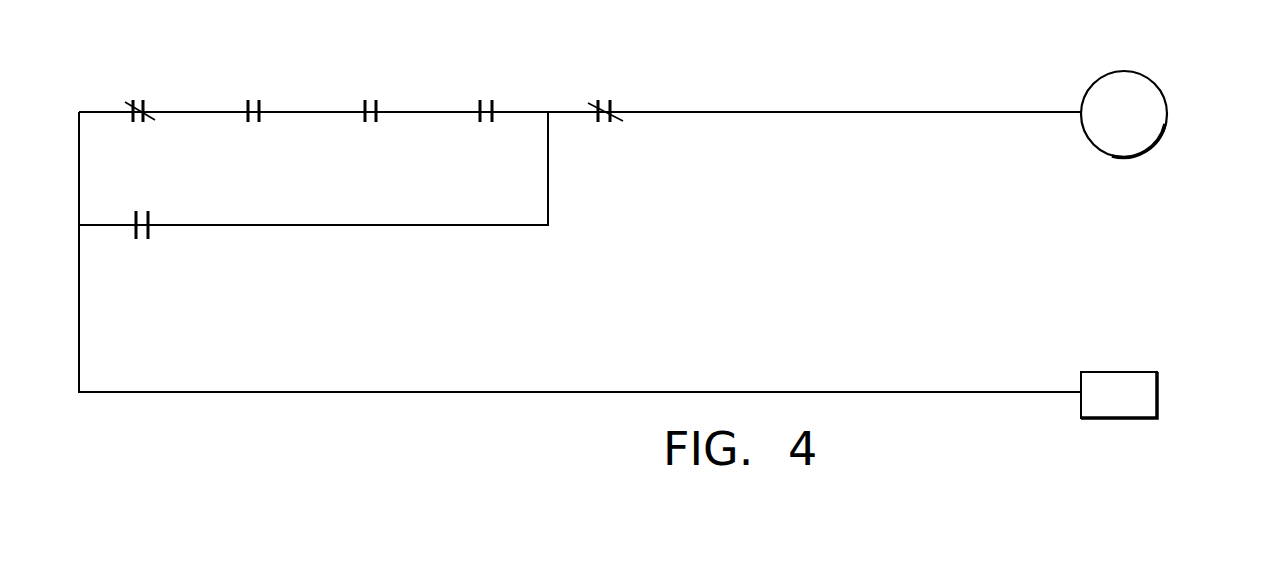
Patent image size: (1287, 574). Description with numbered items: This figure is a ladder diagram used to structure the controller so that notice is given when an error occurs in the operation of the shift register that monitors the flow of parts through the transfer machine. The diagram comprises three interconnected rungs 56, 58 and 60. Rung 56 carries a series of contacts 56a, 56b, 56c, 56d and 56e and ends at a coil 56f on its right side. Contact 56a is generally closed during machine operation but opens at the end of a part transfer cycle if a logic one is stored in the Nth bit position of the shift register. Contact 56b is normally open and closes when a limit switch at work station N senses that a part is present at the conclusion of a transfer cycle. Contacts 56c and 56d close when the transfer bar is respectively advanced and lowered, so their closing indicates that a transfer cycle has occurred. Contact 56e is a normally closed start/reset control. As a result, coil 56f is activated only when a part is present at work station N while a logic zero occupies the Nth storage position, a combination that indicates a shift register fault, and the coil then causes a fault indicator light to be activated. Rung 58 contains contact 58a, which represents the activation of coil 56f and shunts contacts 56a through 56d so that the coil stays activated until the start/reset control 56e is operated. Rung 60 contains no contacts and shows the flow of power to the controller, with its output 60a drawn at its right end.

The rung 56 is at (789, 86).
The contact 56a is at (140, 100).
The contact 56b is at (271, 80).
The contact 56c is at (400, 85).
The contact 56d is at (523, 82).
The start/reset control contact 56e is at (626, 85).
The coil 56f is at (1085, 134).
The rung 58 is at (345, 197).
The contact 58a is at (156, 188).
The rung 60 is at (553, 357).
The power on to controller output 60a is at (1100, 372).